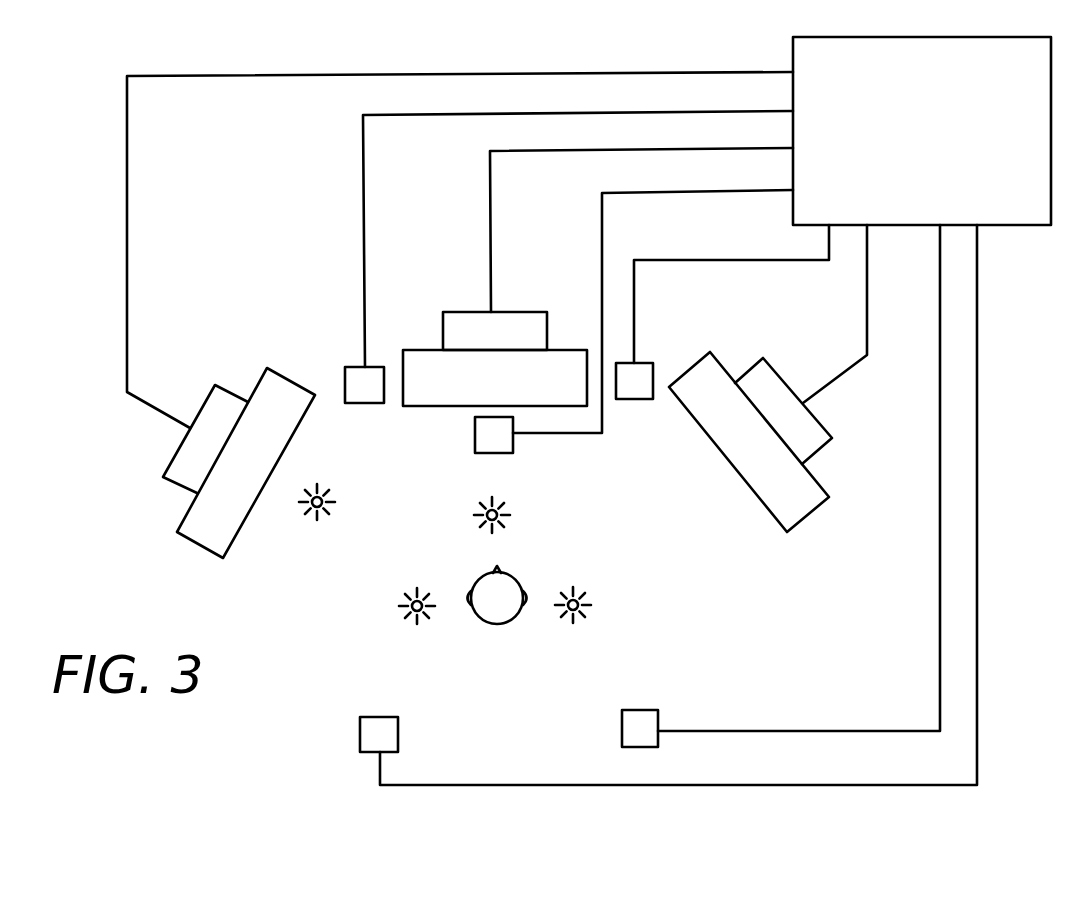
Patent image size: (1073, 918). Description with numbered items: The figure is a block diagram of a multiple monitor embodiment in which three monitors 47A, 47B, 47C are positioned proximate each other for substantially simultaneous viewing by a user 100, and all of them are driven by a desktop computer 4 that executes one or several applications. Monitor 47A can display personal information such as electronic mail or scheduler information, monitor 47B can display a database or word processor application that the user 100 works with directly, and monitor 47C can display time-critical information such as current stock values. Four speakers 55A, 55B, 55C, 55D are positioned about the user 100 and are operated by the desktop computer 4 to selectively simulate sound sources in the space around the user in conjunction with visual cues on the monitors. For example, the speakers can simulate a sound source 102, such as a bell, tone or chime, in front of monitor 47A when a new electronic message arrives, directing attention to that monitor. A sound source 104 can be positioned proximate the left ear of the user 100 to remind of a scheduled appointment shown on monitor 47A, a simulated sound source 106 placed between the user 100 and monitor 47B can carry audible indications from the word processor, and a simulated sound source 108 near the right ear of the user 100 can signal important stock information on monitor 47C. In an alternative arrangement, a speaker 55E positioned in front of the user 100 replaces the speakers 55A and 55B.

The desktop computer 4 is at (922, 131).
The monitor 47A is at (197, 546).
The monitor 47B is at (512, 312).
The monitor 47C is at (813, 458).
The speaker 55A is at (350, 367).
The speaker 55B is at (656, 372).
The speaker 55C is at (620, 730).
The speaker 55D is at (360, 736).
The speaker 55E is at (477, 455).
The user 100 is at (477, 618).
The sound source 102 is at (314, 514).
The sound source 104 is at (403, 608).
The simulated sound source 106 is at (502, 512).
The simulated sound source 108 is at (584, 603).